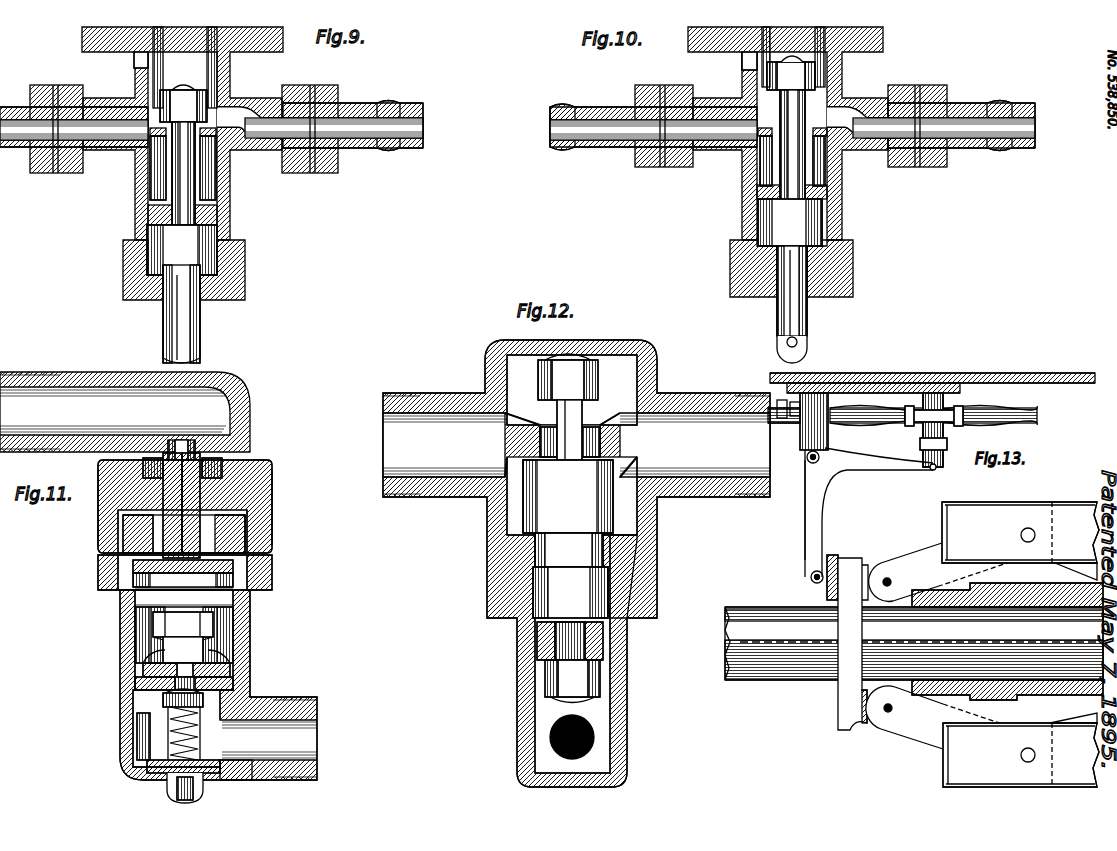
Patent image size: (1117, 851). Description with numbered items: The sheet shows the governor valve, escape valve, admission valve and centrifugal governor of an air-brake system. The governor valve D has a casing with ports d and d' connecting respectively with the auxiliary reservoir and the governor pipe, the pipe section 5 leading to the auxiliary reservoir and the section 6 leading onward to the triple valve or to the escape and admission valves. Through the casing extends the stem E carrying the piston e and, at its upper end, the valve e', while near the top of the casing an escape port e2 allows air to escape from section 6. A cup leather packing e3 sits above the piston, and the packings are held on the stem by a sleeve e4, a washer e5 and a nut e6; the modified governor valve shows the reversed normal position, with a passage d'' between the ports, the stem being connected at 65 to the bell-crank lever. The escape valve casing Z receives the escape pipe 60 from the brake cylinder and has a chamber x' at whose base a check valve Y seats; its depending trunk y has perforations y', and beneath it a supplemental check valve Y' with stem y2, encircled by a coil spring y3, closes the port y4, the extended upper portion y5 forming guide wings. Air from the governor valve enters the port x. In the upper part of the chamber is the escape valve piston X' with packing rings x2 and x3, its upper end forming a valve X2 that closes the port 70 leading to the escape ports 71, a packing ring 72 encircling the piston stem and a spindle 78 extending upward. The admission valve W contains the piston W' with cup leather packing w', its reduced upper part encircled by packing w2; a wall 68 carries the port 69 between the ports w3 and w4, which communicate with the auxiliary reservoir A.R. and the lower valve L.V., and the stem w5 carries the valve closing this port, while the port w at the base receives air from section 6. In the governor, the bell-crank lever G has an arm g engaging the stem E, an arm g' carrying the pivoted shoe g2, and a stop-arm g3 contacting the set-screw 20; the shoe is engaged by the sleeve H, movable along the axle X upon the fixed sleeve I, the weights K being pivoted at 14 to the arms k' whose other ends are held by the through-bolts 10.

In FIG. 9, the governor valve D is at (182, 133).
In FIG. 13, the governor valve D is at (902, 430).
In FIG. 9, the port d' is at (74, 146).
In FIG. 10, the port d' is at (653, 140).
In FIG. 9, the port d is at (334, 142).
In FIG. 10, the port d is at (944, 140).
In FIG. 10, the casing passage d'' is at (788, 133).
In FIG. 9, the piston e is at (182, 198).
In FIG. 10, the piston e is at (791, 136).
In FIG. 9, the valve e' is at (254, 100).
In FIG. 10, the valve e' is at (862, 99).
In FIG. 9, the escape port e2 is at (141, 64).
In FIG. 10, the escape port e2 is at (747, 62).
In FIG. 9, the cup leather packing e3 is at (252, 106).
In FIG. 10, the cup leather packing e3 is at (725, 213).
In FIG. 9, the sleeve e4 is at (207, 198).
In FIG. 9, the washer e5 is at (230, 96).
In FIG. 9, the nut e6 is at (183, 103).
In FIG. 9, the stem E is at (188, 332).
In FIG. 10, the stem E is at (783, 306).
In FIG. 9, the governor pipe section 5 is at (423, 136).
In FIG. 10, the governor pipe section 5 is at (1035, 134).
In FIG. 10, the governor pipe section 6 is at (550, 133).
In FIG. 11, the governor pipe section 6 is at (310, 750).
In FIG. 10, the connection 65 is at (800, 341).
In FIG. 13, the connection 65 is at (937, 467).
In FIG. 11, the escape pipe 60 is at (125, 412).
In FIG. 11, the port 70 is at (194, 445).
In FIG. 11, the escape ports 71 is at (248, 457).
In FIG. 11, the packing ring 72 is at (213, 523).
In FIG. 11, the spindle 78 is at (173, 493).
In FIG. 11, the valve X2 is at (227, 475).
In FIG. 11, the escape valve casing Z is at (198, 507).
In FIG. 11, the escape valve piston X' is at (200, 572).
In FIG. 11, the cup leather packing ring x3 is at (130, 577).
In FIG. 11, the cup leather packing ring x2 is at (133, 602).
In FIG. 11, the chamber x' is at (181, 683).
In FIG. 11, the extended upper portion y5 is at (142, 667).
In FIG. 11, the port y4 is at (248, 665).
In FIG. 11, the perforations y' is at (206, 685).
In FIG. 11, the check valve Y is at (191, 685).
In FIG. 11, the supplemental check valve Y' is at (128, 714).
In FIG. 11, the depending trunk y is at (156, 748).
In FIG. 11, the stem y2 is at (167, 787).
In FIG. 11, the coil spring y3 is at (227, 770).
In FIG. 11, the port x is at (275, 738).
In FIG. 12, the admission valve W is at (576, 563).
In FIG. 12, the admission valve piston W' is at (568, 539).
In FIG. 12, the port w is at (603, 733).
In FIG. 12, the cup leather packing w' is at (595, 662).
In FIG. 12, the packing w2 is at (598, 380).
In FIG. 12, the port w3 is at (444, 445).
In FIG. 12, the port w4 is at (695, 445).
In FIG. 12, the stem w5 is at (564, 432).
In FIG. 12, the wall or diaphragm 68 is at (637, 467).
In FIG. 12, the port 69 is at (593, 433).
In FIG. 12, the air reservoir connection A.R. is at (383, 457).
In FIG. 12, the lower valve connection L.V. is at (740, 455).
In FIG. 13, the set-screw 20 is at (818, 400).
In FIG. 13, the stop-arm g3 is at (815, 428).
In FIG. 13, the arm g is at (879, 472).
In FIG. 13, the bell-crank lever G is at (813, 513).
In FIG. 13, the arm g' is at (825, 510).
In FIG. 13, the pivoted shoe g2 is at (811, 582).
In FIG. 13, the axle X is at (914, 643).
In FIG. 13, the sleeve H is at (850, 710).
In FIG. 13, the sleeve I is at (1007, 649).
In FIG. 13, the arms k' is at (956, 646).
In FIG. 13, the through-bolts 10 is at (891, 583).
In FIG. 13, the governor weights K is at (1020, 644).
In FIG. 13, the pivot 14 is at (1021, 538).